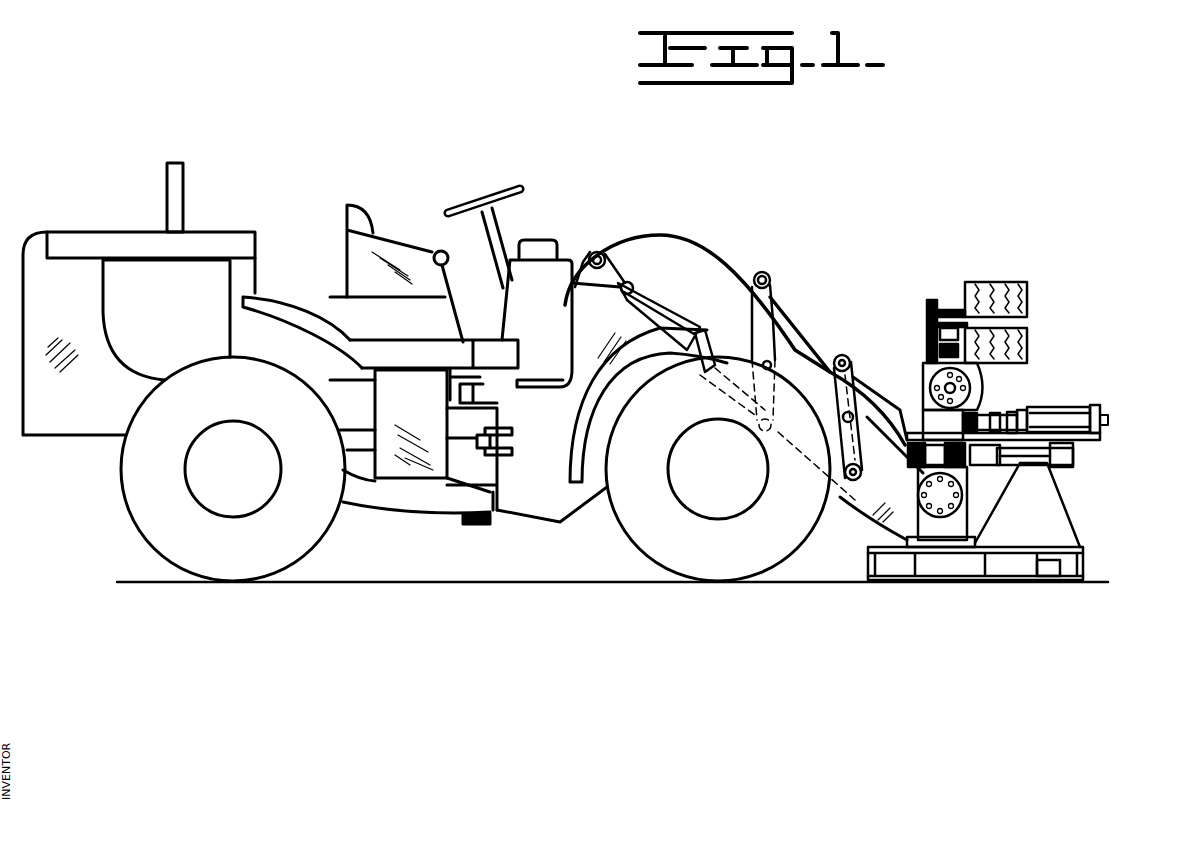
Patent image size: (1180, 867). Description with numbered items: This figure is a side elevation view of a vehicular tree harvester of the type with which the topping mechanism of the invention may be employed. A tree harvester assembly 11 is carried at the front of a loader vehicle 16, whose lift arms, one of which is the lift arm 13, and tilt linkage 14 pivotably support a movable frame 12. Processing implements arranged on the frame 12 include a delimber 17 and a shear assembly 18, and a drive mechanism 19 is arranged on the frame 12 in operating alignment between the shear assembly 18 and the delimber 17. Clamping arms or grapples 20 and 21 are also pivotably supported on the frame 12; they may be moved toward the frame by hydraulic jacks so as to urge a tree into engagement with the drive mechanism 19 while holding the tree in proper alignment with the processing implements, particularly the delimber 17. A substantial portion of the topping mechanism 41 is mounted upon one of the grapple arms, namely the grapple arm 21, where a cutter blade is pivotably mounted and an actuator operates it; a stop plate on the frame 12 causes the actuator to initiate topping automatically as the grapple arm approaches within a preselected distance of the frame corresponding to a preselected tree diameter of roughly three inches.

The tree harvester assembly 11 is at (993, 267).
The movable frame 12 is at (910, 363).
The lift arm 13 is at (853, 510).
The tilt linkage 14 is at (789, 278).
The loader vehicle 16 is at (565, 215).
The delimber 17 is at (1038, 299).
The shear assembly 18 is at (1093, 568).
The drive mechanism 19 is at (982, 403).
The grapple 20 is at (1073, 457).
The grapple arm 21 is at (1097, 417).
The topping mechanism 41 is at (1060, 392).